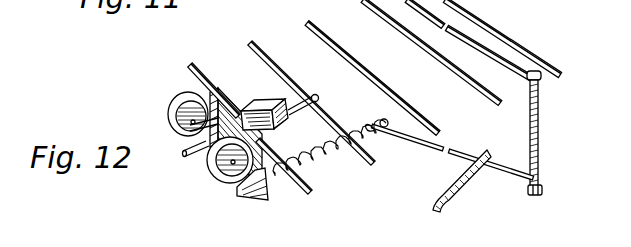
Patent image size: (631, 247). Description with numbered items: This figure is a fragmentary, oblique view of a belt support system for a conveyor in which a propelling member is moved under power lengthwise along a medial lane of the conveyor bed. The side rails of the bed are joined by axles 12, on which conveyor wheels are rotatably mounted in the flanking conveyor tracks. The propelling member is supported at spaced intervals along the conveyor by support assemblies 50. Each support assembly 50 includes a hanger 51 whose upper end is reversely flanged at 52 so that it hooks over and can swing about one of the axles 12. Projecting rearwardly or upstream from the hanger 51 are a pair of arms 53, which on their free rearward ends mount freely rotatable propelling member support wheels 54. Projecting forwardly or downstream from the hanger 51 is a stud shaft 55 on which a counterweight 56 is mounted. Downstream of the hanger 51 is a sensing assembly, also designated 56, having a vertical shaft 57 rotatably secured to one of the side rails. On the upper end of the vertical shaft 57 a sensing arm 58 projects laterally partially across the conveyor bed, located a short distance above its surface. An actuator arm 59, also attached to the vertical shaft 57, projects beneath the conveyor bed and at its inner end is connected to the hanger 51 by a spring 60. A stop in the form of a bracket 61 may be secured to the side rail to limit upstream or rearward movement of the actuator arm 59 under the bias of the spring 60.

The axles 12 is at (205, 73).
The support assembly 50 is at (216, 41).
The hanger 51 is at (231, 188).
The reversely flanged upper end 52 is at (222, 90).
The arms 53 is at (183, 135).
The propelling member support wheels 54 is at (181, 97).
The stud shaft 55 is at (316, 93).
The counterweight 56 is at (283, 122).
The vertical shaft 57 is at (541, 148).
The sensing arm 58 is at (502, 63).
The actuator arm 59 is at (413, 141).
The spring 60 is at (330, 153).
The bracket 61 is at (463, 190).